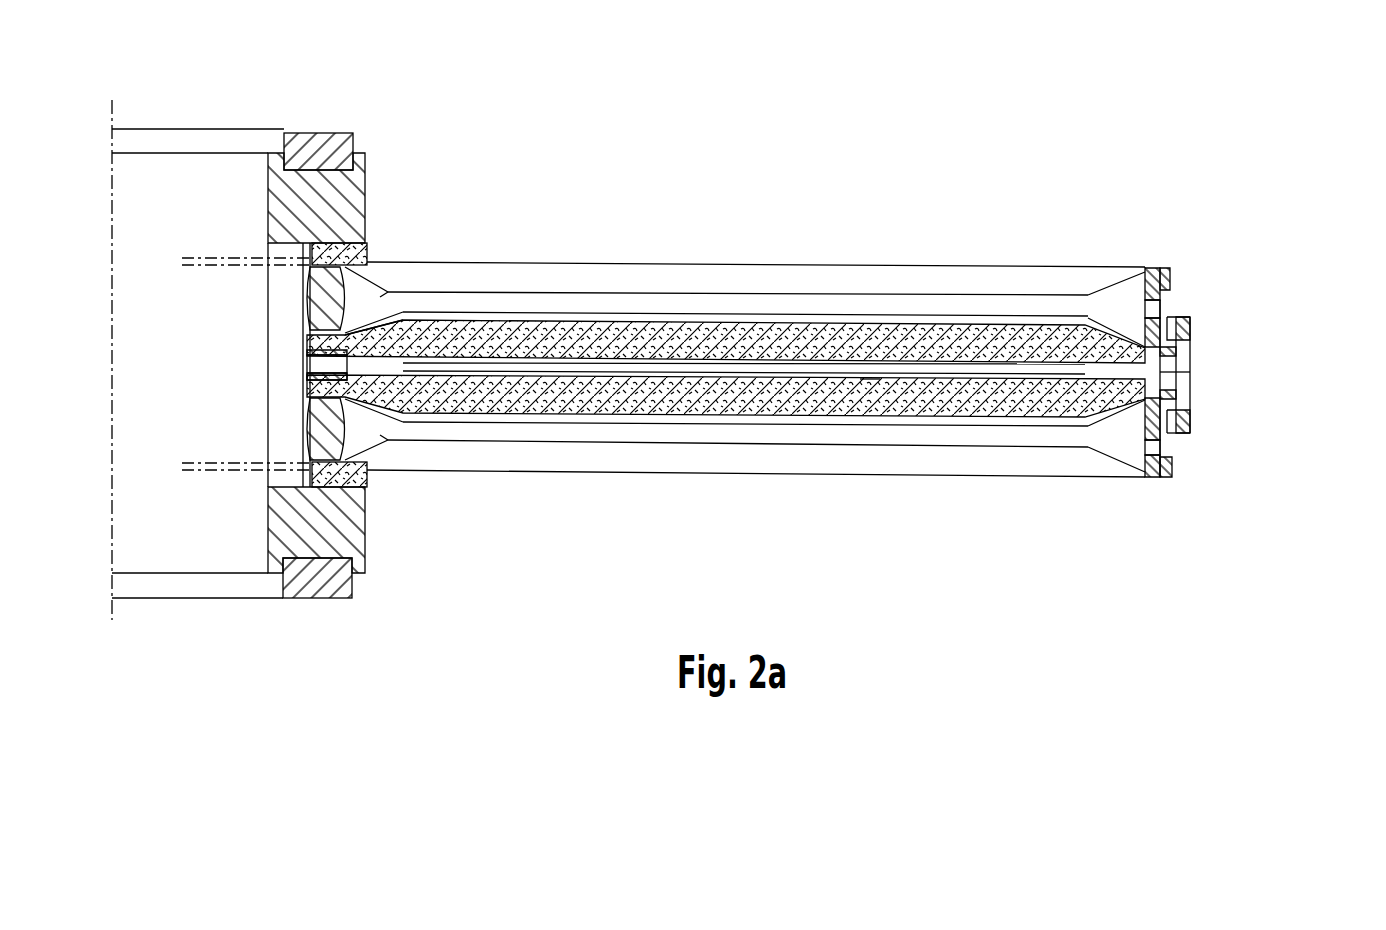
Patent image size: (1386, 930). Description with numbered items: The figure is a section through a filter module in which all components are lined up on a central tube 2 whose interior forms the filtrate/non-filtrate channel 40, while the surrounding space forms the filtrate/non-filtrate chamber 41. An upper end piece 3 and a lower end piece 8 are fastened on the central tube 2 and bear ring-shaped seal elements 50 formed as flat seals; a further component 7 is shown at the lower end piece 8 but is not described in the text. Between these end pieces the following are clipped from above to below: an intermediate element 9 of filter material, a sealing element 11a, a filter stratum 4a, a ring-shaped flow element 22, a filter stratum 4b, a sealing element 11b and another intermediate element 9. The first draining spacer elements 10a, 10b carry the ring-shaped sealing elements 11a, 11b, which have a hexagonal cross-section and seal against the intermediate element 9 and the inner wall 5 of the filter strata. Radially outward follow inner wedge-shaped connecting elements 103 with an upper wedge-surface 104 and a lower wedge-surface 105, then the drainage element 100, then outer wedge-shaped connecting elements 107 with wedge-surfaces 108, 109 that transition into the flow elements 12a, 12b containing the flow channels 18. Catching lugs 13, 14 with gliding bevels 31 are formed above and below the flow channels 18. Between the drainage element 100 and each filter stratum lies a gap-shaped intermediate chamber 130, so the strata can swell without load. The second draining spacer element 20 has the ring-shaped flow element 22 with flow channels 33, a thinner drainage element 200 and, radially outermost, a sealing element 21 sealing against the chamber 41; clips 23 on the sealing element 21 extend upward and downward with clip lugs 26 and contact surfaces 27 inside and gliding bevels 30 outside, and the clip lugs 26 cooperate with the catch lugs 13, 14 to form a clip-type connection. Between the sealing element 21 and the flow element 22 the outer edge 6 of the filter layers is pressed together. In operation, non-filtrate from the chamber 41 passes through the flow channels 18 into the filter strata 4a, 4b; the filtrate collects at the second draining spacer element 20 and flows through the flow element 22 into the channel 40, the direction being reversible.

The central tube 2 is at (282, 283).
The upper end piece 3 is at (333, 190).
The filter stratum 4a is at (560, 322).
The filter stratum 4b is at (562, 405).
The inner wall of the filter stratum 5 is at (303, 338).
The outer edge of the filter layers 6 is at (1178, 351).
The sealing element 7 is at (332, 483).
The lower end piece 8 is at (358, 550).
The intermediate element 9 is at (372, 262).
The first draining spacer element 10a is at (923, 296).
The first draining spacer element 10b is at (933, 444).
The sealing element 11a is at (312, 302).
The sealing element 11b is at (317, 435).
The flow element 12a is at (1154, 297).
The flow element 12b is at (1153, 478).
The catching lug 13 is at (1172, 288).
The catch lug 14 is at (1189, 332).
The flow channel 18 is at (1163, 306).
The second draining spacer element 20 is at (828, 366).
The sealing element 21 is at (1191, 372).
The ring-shaped flow element 22 is at (382, 333).
The clip 23 is at (1191, 410).
The clip lug 26 is at (1186, 318).
The contact surface 27 is at (1185, 437).
The gliding bevel 30 is at (1180, 450).
The gliding bevel 31 is at (1163, 480).
The flow channel 33 is at (303, 370).
The filtrate/non-filtrate channel 40 is at (182, 511).
The filtrate/non-filtrate chamber 41 is at (1370, 276).
The ring-shaped seal element 50 is at (300, 133).
The drainage element 100 is at (670, 300).
The inner wedge-shaped connecting element 103 is at (392, 294).
The upper wedge-surface 104 is at (378, 297).
The lower wedge-surface 105 is at (400, 318).
The outer wedge-shaped connecting element 107 is at (1118, 306).
The upper wedge-surface 108 is at (1152, 310).
The lower wedge-surface 109 is at (1145, 448).
The gap-shaped intermediate chamber 130 is at (758, 325).
The drainage element 200 is at (868, 400).